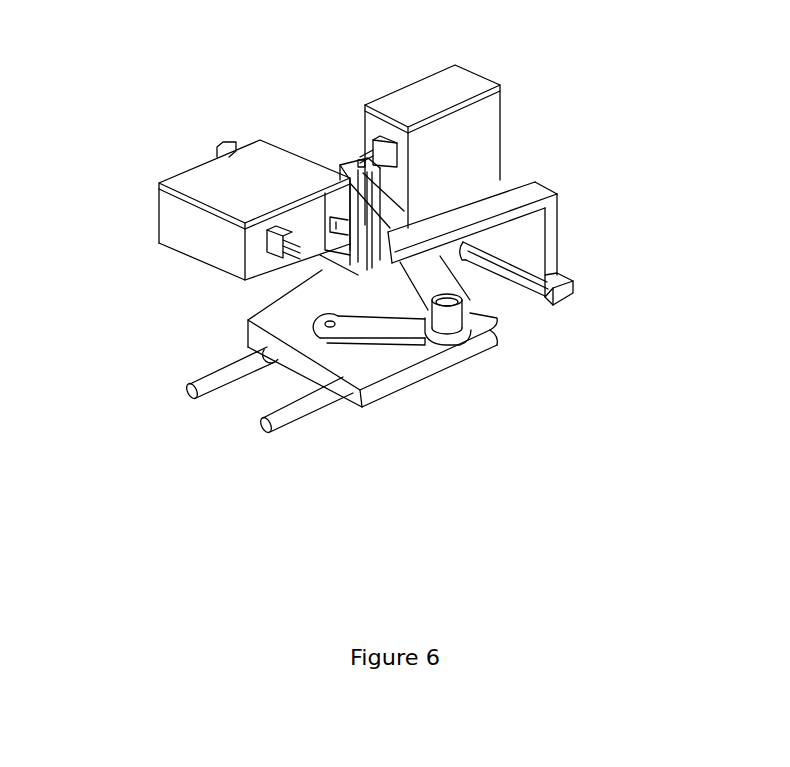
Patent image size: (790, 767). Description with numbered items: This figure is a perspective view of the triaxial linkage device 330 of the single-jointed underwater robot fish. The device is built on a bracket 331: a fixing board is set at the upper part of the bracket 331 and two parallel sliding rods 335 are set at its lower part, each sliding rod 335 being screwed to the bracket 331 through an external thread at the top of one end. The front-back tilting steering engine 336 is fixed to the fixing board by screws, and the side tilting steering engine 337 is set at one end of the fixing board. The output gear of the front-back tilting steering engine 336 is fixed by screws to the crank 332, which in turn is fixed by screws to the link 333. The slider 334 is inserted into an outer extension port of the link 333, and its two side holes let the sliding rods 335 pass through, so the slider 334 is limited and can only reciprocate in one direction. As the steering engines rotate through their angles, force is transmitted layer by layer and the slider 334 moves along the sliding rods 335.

The triaxial linkage device 330 is at (202, 100).
The bracket 331 is at (547, 247).
The crank 332 is at (443, 280).
The link 333 is at (385, 327).
The slider 334 is at (360, 358).
The sliding rod 335 is at (313, 402).
The front-back tilting steering engine 336 is at (473, 140).
The side tilting steering engine 337 is at (252, 180).